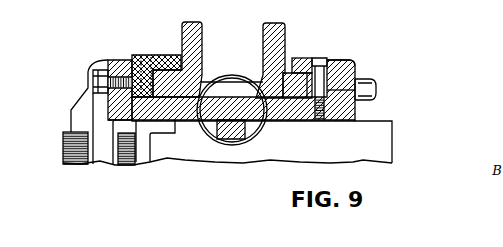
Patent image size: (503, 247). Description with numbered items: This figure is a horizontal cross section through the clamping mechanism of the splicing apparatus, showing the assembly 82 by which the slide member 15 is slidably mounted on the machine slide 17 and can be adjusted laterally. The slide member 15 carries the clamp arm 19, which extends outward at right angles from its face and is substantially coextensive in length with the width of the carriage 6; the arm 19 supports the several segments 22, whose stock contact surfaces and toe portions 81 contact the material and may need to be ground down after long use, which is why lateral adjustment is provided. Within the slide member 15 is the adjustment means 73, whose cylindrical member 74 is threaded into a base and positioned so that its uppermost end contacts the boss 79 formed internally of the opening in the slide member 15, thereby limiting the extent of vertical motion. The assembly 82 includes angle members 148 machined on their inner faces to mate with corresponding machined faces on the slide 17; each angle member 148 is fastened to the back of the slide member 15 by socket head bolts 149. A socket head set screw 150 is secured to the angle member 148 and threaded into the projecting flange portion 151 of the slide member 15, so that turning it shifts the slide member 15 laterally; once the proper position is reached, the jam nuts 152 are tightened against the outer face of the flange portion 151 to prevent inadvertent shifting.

The carriage 6 is at (375, 133).
The slide member 15 is at (357, 112).
The machine slide 17 is at (284, 43).
The clamp arm 19 is at (103, 162).
The segment 22 is at (80, 164).
The adjustment means 73 is at (205, 138).
The cylindrical member 74 is at (230, 90).
The boss 79 is at (234, 133).
The toe portion 81 is at (62, 151).
The assembly 82 is at (157, 54).
The angle member 148 is at (323, 58).
The socket head bolt 149 is at (331, 61).
The socket head set screw 150 is at (375, 89).
The projecting flange portion 151 is at (352, 61).
The jam nut 152 is at (363, 79).